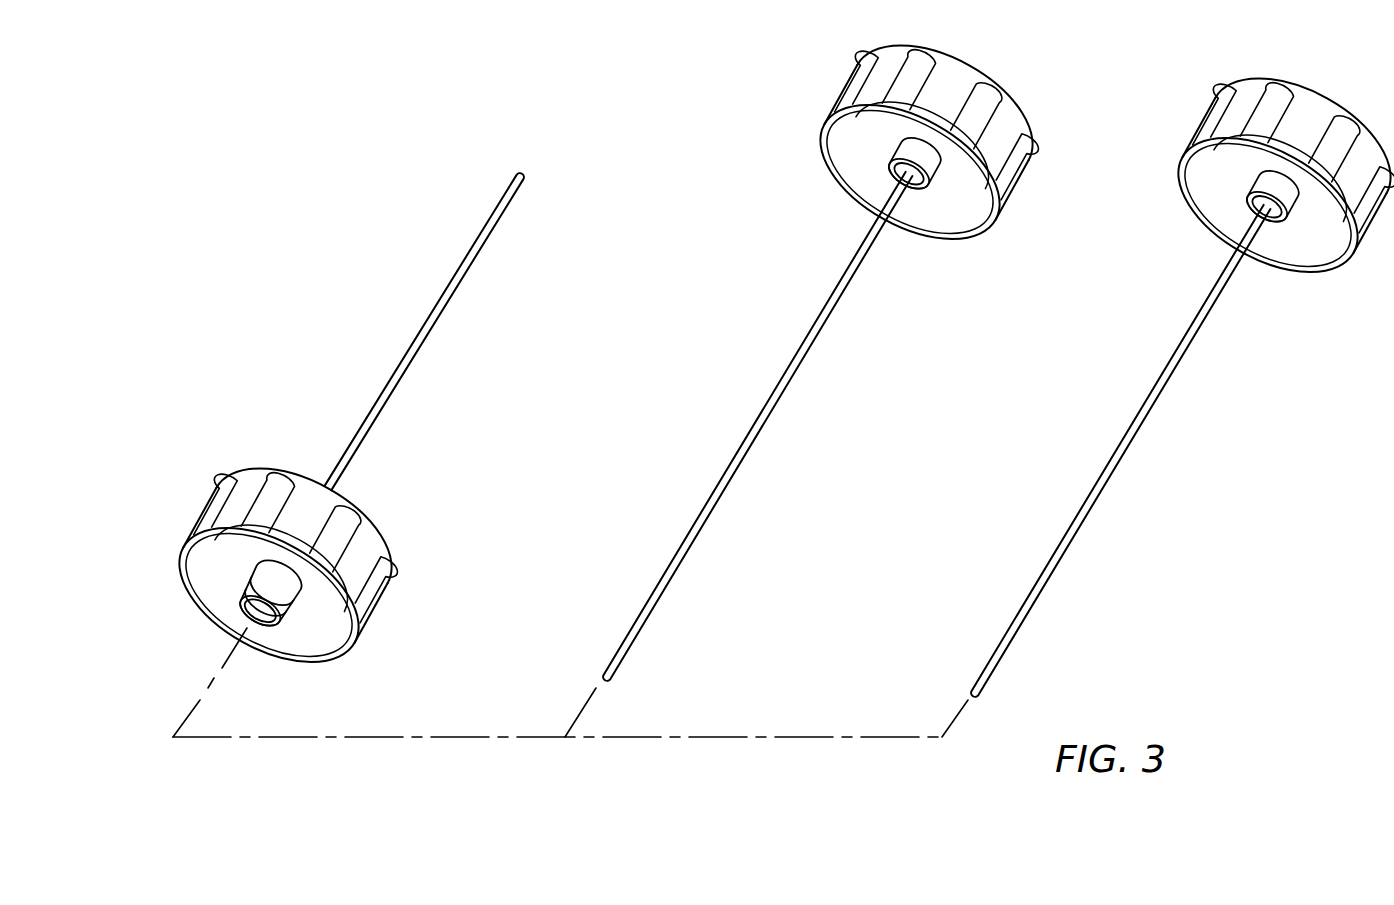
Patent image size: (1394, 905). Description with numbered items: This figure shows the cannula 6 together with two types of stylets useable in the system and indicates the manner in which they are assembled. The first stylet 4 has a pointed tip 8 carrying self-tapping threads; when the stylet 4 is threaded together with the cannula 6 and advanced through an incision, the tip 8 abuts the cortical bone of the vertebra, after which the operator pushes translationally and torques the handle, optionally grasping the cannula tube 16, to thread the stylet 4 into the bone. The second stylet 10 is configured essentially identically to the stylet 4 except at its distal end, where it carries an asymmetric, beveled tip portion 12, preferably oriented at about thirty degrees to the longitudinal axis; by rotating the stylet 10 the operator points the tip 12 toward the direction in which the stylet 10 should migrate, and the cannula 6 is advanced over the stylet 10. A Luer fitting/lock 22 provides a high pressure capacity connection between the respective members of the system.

The stylet 4 is at (827, 228).
The cannula 6 is at (253, 537).
The tip 8 is at (605, 672).
The second stylet 10 is at (1205, 255).
The beveled tip portion 12 is at (970, 690).
The cannula tube 16 is at (440, 322).
The Luer fittings/locks 22 is at (253, 592).